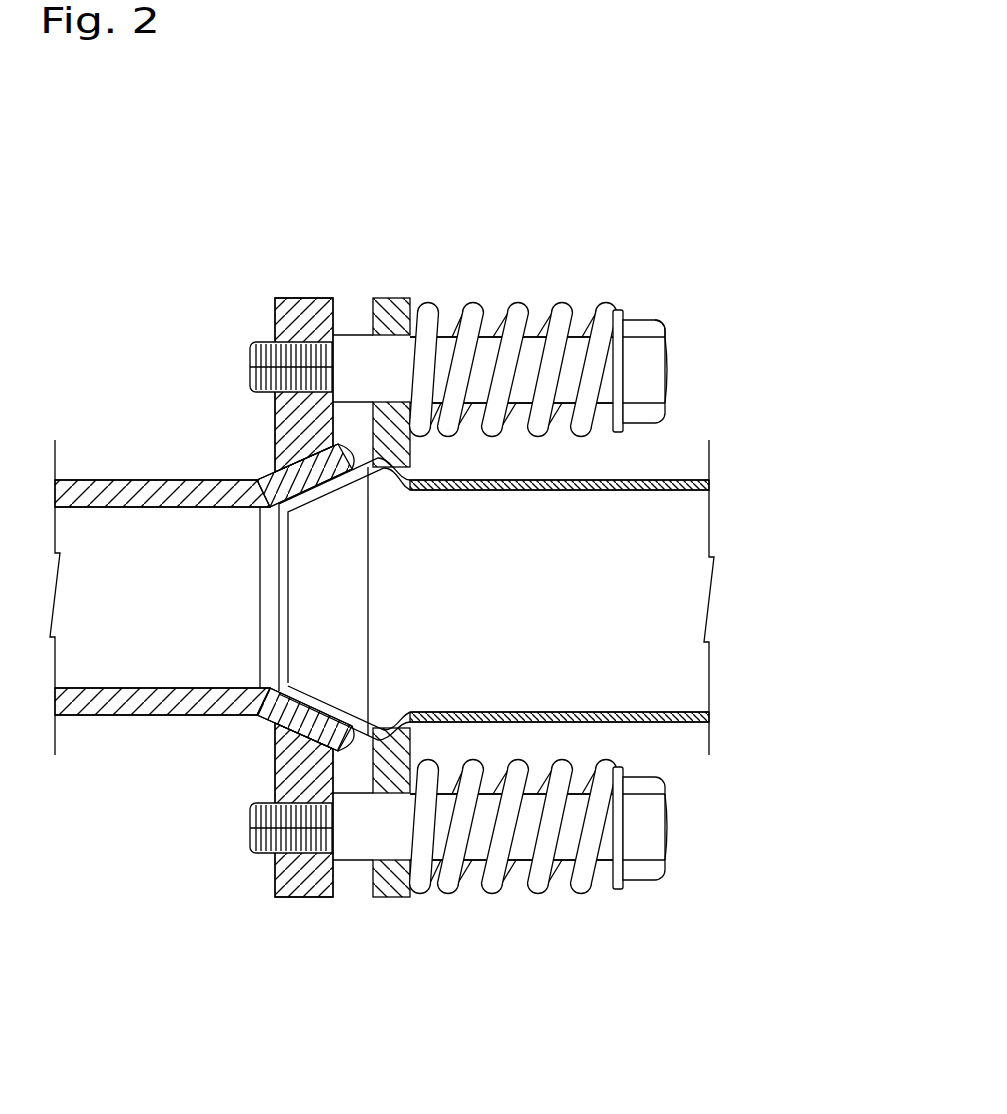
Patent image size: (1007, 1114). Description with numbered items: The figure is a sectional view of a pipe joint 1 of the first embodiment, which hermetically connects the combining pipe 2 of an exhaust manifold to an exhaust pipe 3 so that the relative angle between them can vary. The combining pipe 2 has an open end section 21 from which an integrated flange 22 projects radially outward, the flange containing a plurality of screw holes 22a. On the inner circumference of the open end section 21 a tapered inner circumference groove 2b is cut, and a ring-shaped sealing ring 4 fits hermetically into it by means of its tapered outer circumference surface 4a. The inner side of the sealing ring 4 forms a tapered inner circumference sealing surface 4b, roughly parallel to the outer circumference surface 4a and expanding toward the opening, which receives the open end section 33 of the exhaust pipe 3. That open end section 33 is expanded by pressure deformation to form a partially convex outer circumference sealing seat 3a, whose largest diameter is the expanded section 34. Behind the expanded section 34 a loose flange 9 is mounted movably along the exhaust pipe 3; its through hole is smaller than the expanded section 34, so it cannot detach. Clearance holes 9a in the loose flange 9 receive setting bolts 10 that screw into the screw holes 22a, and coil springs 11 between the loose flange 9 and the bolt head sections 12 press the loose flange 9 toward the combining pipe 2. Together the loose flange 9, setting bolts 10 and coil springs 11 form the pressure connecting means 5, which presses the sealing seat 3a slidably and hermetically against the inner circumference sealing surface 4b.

The pipe joint 1 is at (219, 265).
The combining pipe 2 is at (113, 466).
The inner circumference groove 2b is at (296, 462).
The exhaust pipe 3 is at (679, 467).
The outer circumference sealing seat 3a is at (372, 472).
The ring-shaped sealing ring 4 is at (262, 478).
The outer circumference surface 4a is at (338, 446).
The inner circumference sealing surface 4b is at (286, 502).
The pressure connecting means 5 is at (463, 264).
The loose flange 9 is at (404, 292).
The clearance holes 9a is at (373, 337).
The setting bolts 10 is at (644, 308).
The coil springs 11 is at (556, 305).
The bolt head sections 12 is at (668, 330).
The open end section 21 is at (260, 510).
The integrated flange 22 is at (288, 298).
The screw holes 22a is at (273, 352).
The open end section 33 is at (291, 686).
The expanded section 34 is at (405, 458).